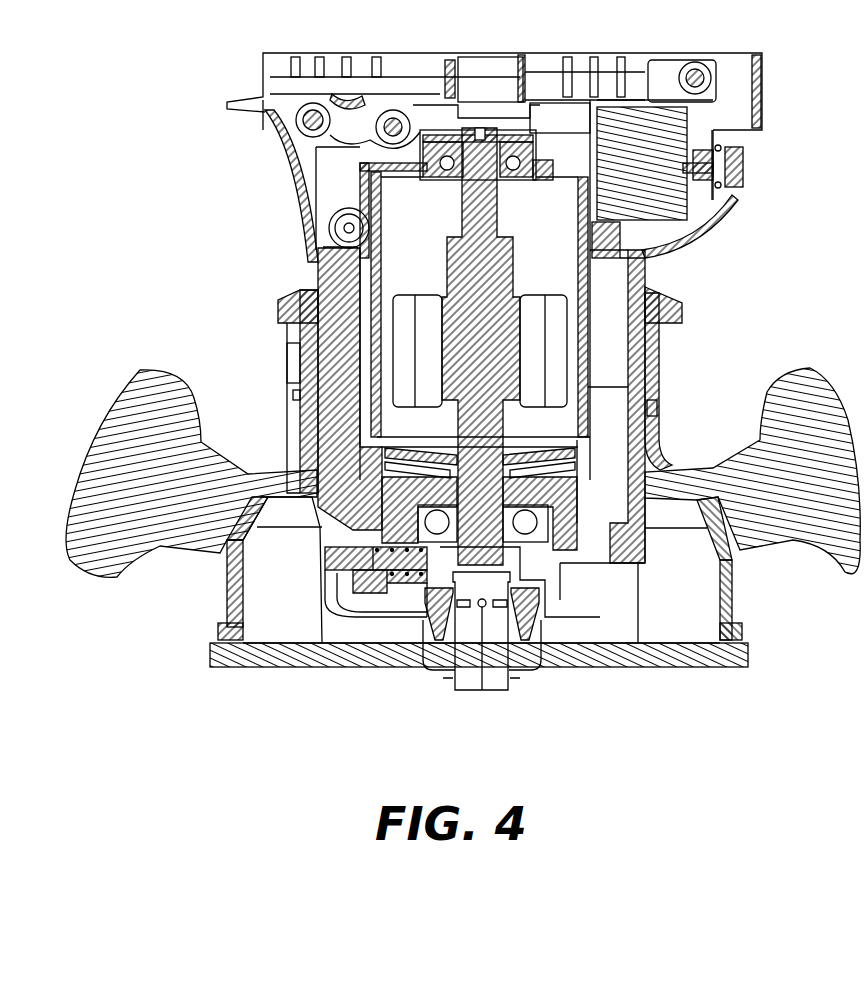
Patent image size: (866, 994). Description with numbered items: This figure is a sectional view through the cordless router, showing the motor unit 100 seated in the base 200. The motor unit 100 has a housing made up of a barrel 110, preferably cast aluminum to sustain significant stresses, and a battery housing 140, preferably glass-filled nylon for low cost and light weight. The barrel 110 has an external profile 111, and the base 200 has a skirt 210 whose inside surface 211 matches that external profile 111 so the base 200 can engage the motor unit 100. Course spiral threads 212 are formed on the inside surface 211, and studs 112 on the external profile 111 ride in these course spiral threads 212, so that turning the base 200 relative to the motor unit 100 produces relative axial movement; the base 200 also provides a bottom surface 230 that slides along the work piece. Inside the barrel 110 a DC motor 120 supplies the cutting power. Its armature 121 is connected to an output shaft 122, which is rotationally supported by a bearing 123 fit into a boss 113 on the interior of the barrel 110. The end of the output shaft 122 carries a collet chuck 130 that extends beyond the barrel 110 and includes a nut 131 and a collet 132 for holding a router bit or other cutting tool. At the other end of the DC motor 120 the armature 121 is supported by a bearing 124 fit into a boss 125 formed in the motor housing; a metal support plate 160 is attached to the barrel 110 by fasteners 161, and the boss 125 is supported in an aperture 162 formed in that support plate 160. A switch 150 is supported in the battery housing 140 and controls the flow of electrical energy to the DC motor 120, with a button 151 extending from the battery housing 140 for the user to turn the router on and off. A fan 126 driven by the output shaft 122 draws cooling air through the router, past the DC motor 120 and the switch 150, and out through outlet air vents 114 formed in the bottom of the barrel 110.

The motor unit 100 is at (300, 190).
The barrel 110 is at (645, 272).
The external profile 111 is at (655, 342).
The studs 112 is at (675, 300).
The boss 113 is at (587, 505).
The outlet air vents 114 is at (597, 537).
The DC motor 120 is at (622, 333).
The armature 121 is at (498, 274).
The output shaft 122 is at (503, 410).
The bearing 123 is at (540, 550).
The bearing 124 is at (532, 178).
The boss 125 is at (536, 103).
The fan 126 is at (437, 452).
The collet chuck 130 is at (537, 580).
The nut 131 is at (516, 683).
The collet 132 is at (445, 690).
The battery housing 140 is at (768, 96).
The switch 150 is at (735, 208).
The button 151 is at (745, 165).
The metal support plate 160 is at (358, 176).
The fasteners 161 is at (325, 242).
The aperture 162 is at (428, 192).
The base 200 is at (735, 593).
The skirt 210 is at (300, 428).
The inside surface 211 is at (292, 362).
The course spiral threads 212 is at (660, 405).
The bottom surface 230 is at (663, 670).